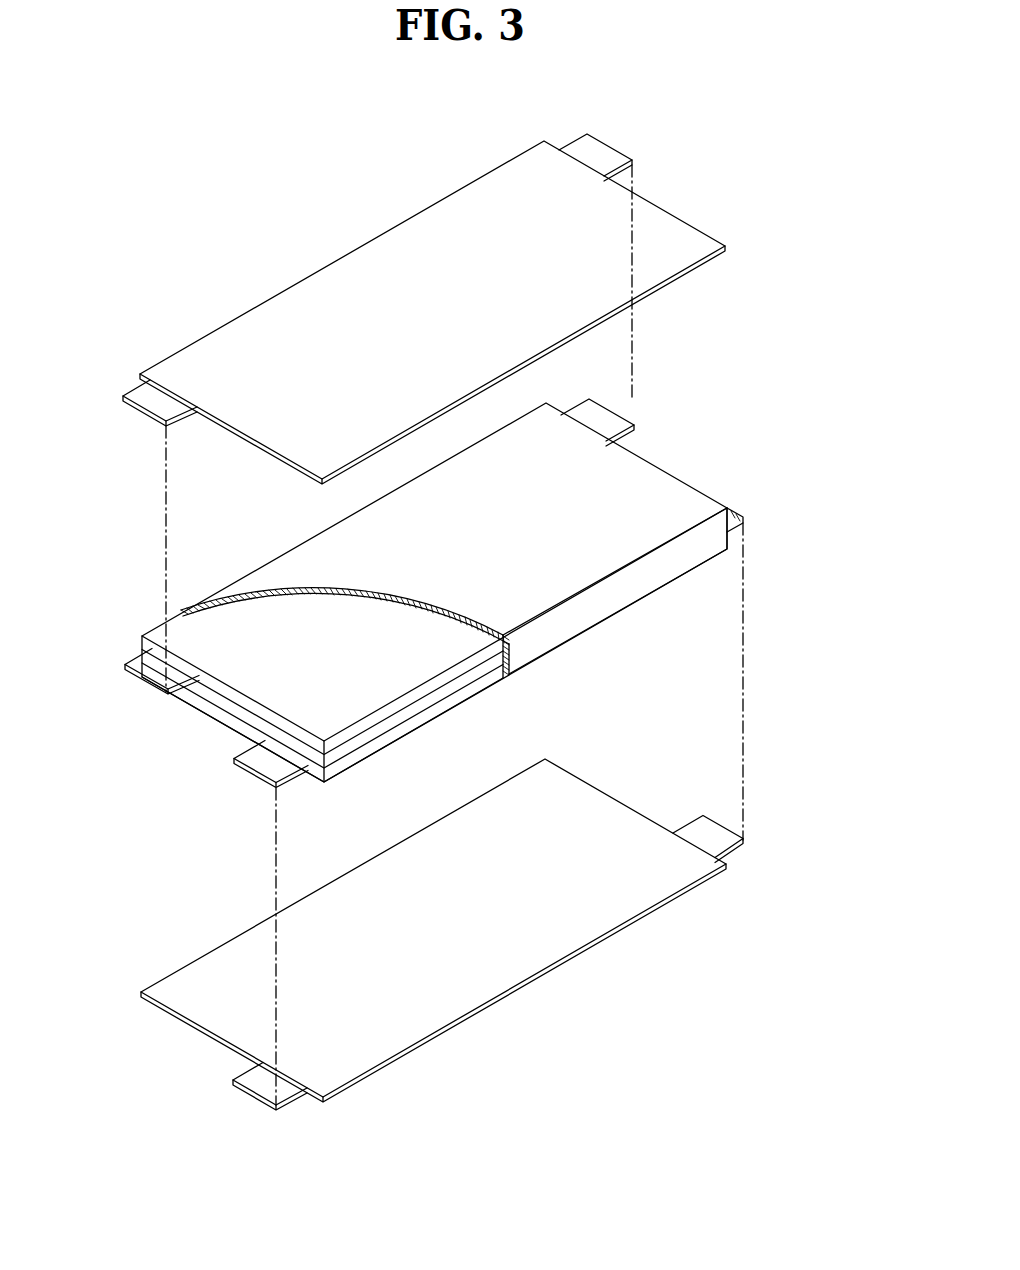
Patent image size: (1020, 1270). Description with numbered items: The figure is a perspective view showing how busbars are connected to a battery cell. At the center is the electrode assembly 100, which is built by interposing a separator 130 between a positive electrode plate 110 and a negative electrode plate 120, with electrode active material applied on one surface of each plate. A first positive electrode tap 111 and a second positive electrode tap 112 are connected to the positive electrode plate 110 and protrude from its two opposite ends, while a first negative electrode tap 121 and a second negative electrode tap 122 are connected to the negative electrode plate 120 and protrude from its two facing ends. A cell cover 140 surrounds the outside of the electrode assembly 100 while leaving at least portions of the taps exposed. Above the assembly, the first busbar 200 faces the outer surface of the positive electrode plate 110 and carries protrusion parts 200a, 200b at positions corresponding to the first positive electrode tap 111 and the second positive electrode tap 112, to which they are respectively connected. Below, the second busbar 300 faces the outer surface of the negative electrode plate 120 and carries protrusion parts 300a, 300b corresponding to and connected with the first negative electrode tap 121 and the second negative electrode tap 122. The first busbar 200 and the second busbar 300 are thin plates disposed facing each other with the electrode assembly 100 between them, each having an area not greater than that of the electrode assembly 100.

The electrode assembly 100 is at (703, 432).
The positive electrode plate 110 is at (437, 686).
The first positive electrode tap 111 is at (150, 672).
The second positive electrode tap 112 is at (600, 412).
The negative electrode plate 120 is at (377, 742).
The first negative electrode tap 121 is at (260, 765).
The second negative electrode tap 122 is at (737, 507).
The separator 130 is at (407, 714).
The cell cover 140 is at (603, 606).
The first busbar 200 is at (387, 252).
The protrusion part 200a is at (158, 405).
The protrusion part 200b is at (597, 154).
The second busbar 300 is at (512, 970).
The protrusion part 300a is at (261, 1087).
The protrusion part 300b is at (715, 828).